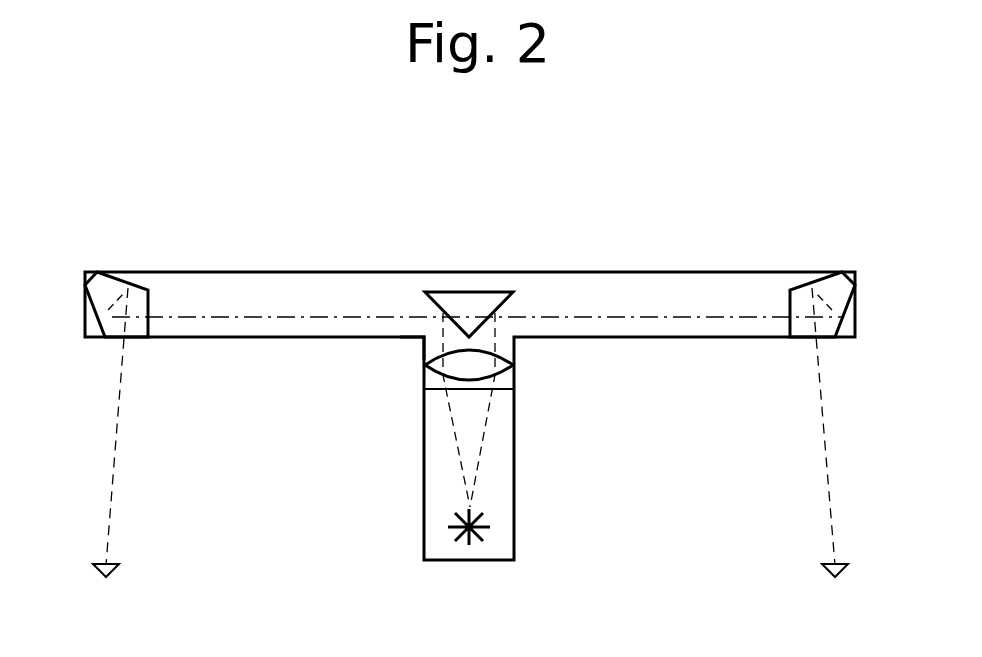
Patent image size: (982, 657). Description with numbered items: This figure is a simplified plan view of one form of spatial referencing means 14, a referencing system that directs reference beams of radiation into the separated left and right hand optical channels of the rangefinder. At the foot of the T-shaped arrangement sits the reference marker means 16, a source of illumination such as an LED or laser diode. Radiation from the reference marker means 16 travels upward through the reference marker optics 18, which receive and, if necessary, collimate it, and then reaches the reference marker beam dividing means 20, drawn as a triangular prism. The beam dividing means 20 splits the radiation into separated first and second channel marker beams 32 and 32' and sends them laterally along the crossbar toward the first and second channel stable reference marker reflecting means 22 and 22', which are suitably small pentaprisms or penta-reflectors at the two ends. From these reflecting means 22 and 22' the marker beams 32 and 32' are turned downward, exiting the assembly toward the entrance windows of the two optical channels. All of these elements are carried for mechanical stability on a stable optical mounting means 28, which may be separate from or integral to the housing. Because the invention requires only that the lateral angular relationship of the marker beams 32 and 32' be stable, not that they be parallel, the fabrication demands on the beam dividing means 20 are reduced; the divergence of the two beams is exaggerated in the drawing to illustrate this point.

The spatial referencing means 14 is at (494, 219).
The reference marker means 16 is at (493, 527).
The reference marker optics 18 is at (482, 363).
The reference marker beam dividing means 20 is at (482, 298).
The first channel stable reference marker reflecting means 22 is at (97, 269).
The second channel stable reference marker reflecting means 22' is at (841, 269).
The stable optical mounting means 28 is at (423, 338).
The first channel marker beam 32 is at (158, 432).
The second channel marker beam 32' is at (774, 432).